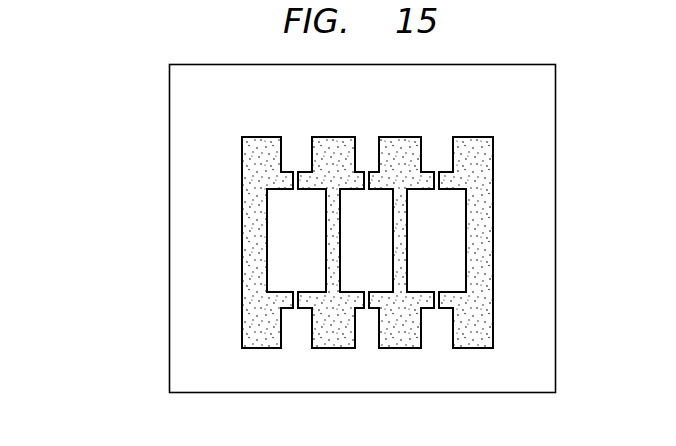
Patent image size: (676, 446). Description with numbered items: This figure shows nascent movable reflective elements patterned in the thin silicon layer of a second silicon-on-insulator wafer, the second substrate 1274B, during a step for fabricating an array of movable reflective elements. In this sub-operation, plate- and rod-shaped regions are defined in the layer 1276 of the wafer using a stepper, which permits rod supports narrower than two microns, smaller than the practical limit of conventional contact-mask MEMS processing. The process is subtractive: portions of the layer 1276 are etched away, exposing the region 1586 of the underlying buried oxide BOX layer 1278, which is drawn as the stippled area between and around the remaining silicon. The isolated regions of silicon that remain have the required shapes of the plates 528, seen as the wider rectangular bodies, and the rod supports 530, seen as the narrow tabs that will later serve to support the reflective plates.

The second substrate 1274B is at (169, 220).
The layer 1276 is at (223, 103).
The exposed region of BOX layer 1586 is at (248, 187).
The BOX layer 1278 is at (260, 318).
The rod support 530 is at (442, 182).
The plate 528 is at (442, 243).